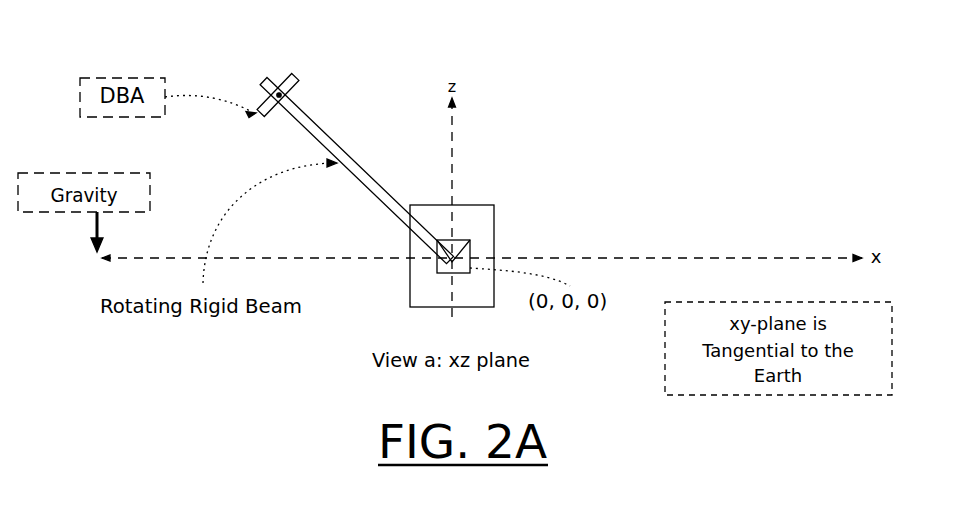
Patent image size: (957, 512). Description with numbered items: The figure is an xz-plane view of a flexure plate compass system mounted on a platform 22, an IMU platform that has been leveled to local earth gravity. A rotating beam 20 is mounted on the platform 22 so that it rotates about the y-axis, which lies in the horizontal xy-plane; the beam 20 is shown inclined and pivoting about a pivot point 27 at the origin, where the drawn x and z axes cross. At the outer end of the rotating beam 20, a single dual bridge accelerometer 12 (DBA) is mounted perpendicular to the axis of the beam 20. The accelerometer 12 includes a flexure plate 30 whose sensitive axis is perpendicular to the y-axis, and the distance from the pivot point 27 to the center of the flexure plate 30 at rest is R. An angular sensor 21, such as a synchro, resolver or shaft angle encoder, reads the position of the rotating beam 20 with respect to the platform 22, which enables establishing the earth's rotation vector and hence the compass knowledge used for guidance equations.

The accelerometer 12 is at (281, 91).
The rotating beam 20 is at (336, 138).
The angular sensor 21 is at (455, 262).
The platform 22 is at (475, 206).
The pivot point 27 is at (452, 262).
The flexure plate 30 is at (284, 97).